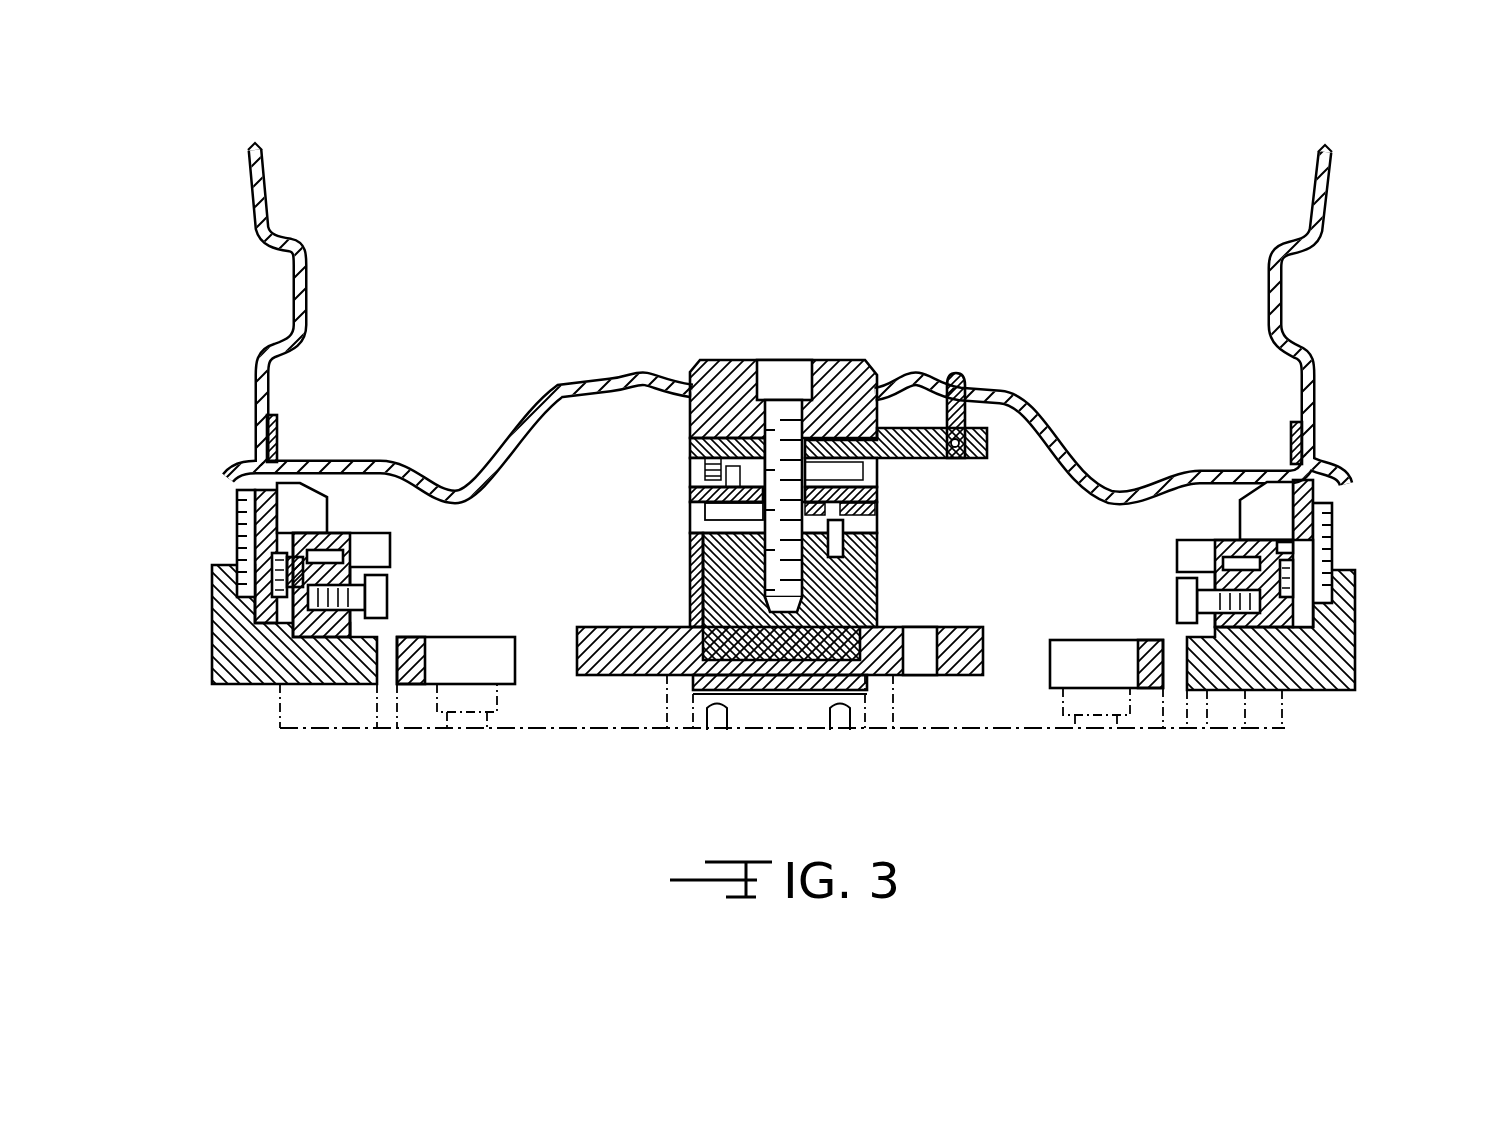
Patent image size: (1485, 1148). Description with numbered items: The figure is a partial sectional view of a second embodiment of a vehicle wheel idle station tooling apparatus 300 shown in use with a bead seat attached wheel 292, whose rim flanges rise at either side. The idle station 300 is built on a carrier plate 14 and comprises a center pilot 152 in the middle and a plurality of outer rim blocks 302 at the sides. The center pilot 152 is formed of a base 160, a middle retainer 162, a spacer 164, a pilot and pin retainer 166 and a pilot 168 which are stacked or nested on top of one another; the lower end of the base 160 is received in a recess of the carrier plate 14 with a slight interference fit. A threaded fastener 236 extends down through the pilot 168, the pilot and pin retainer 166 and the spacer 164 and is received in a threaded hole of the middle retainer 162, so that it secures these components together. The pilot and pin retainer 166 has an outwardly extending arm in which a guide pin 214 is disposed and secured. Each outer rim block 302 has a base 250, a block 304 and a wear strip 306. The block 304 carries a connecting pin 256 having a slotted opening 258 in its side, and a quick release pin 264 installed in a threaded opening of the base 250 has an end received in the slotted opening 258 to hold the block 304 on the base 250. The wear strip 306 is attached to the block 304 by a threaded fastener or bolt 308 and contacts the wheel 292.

The carrier plate 14 is at (988, 708).
The center pilot 152 is at (826, 507).
The base 160 is at (637, 635).
The middle retainer 162 is at (882, 542).
The spacer 164 is at (690, 483).
The pilot and pin retainer 166 is at (690, 440).
The pilot 168 is at (690, 366).
The guide pin 214 is at (968, 390).
The threaded fastener 236 is at (770, 370).
The base 250 is at (413, 656).
The connecting pin 256 is at (270, 628).
The slotted opening 258 is at (290, 628).
The quick release pin 264 is at (380, 598).
The bead seat attached wheel 292 is at (1333, 230).
The idle station tooling apparatus 300 is at (447, 375).
The outer rim blocks 302 is at (207, 652).
The block 304 is at (345, 538).
The wear strip 306 is at (290, 477).
The threaded fastener or bolt 308 is at (240, 497).